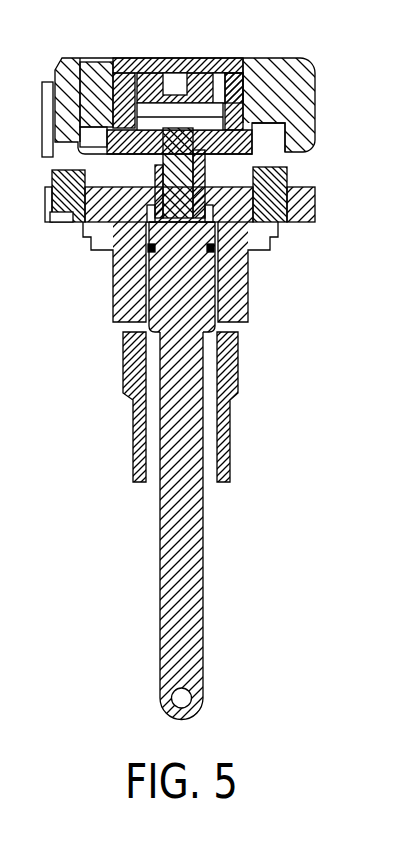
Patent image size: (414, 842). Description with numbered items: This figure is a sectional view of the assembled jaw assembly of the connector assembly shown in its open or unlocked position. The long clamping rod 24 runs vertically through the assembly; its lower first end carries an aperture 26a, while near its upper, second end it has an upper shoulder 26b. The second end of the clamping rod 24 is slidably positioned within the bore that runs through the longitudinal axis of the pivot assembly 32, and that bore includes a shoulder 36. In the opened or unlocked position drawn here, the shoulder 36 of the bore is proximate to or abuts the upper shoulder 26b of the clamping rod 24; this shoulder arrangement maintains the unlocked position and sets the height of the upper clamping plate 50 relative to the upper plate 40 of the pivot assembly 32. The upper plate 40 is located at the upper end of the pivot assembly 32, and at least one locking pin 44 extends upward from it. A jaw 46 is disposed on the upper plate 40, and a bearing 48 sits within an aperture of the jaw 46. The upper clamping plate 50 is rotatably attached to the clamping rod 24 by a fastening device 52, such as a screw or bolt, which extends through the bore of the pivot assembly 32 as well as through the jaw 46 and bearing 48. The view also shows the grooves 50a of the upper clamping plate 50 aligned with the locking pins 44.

The clamping rod 24 is at (195, 562).
The aperture 26a is at (188, 698).
The upper shoulder 26b is at (233, 278).
The pivot assembly 32 is at (120, 267).
The shoulder 36 is at (212, 248).
The upper plate 40 is at (315, 205).
The locking pin 44 is at (287, 172).
The jaw 46 is at (233, 87).
The bearing 48 is at (157, 110).
The upper clamping plate 50 is at (298, 72).
The grooves 50a is at (277, 138).
The fastening device 52 is at (200, 62).